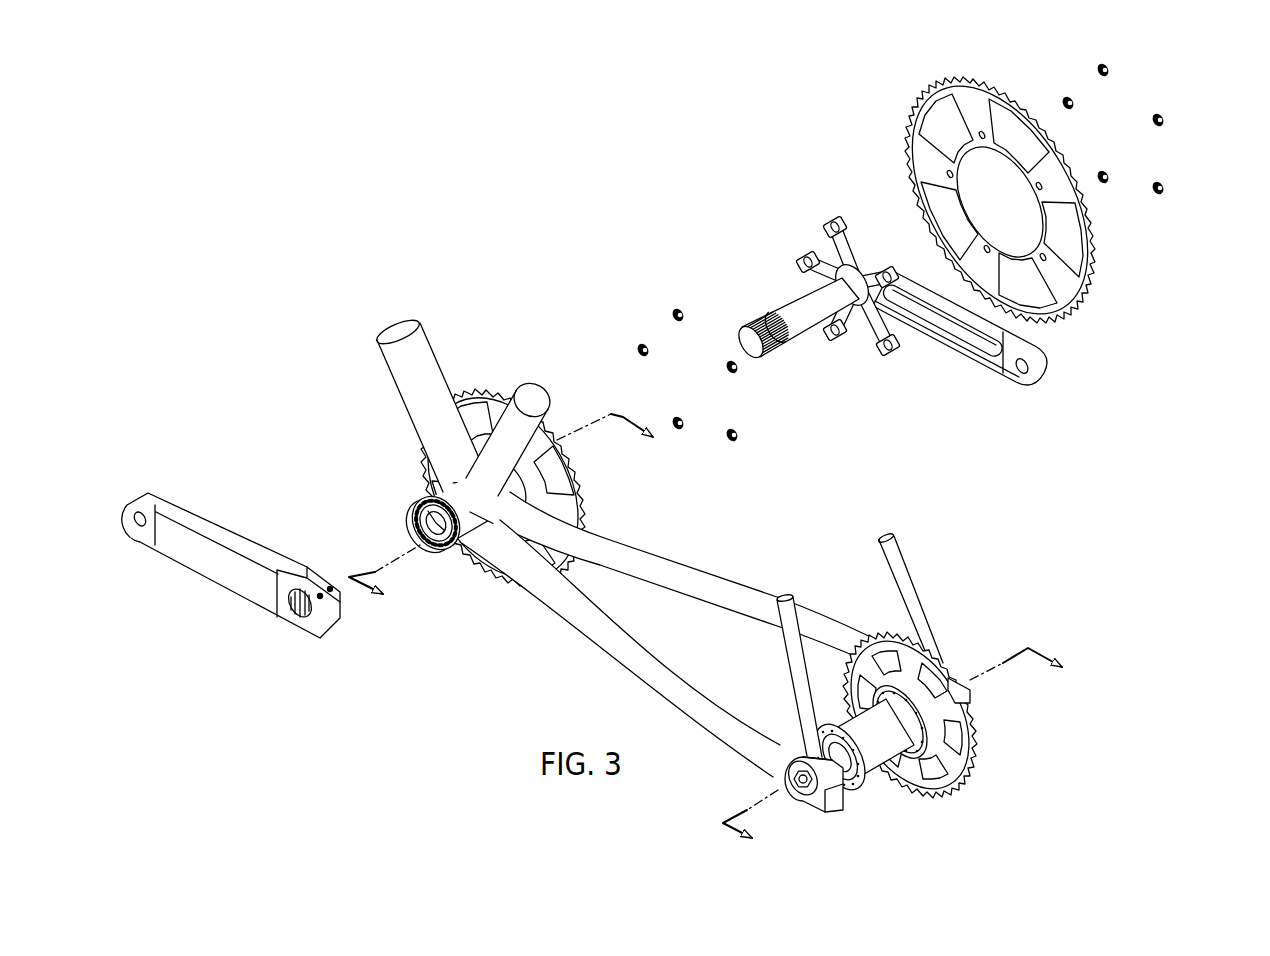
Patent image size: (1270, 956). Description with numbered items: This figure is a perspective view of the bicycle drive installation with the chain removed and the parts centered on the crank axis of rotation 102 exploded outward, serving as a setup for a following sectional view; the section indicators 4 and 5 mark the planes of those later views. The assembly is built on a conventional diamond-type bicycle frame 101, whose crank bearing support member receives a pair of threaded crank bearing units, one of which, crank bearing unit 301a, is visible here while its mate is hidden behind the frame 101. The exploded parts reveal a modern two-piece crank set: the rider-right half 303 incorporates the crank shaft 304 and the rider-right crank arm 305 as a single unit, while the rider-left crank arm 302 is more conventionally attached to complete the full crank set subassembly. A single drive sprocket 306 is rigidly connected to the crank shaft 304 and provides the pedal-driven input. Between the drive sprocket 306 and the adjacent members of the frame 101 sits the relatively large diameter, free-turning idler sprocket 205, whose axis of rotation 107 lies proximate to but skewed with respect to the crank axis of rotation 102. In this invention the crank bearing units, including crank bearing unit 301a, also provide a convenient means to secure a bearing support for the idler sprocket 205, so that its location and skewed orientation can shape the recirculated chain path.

The bicycle frame 101 is at (430, 437).
The axis of rotation of the crank shaft 102 is at (1222, 73).
The axis of rotation of the idler sprocket 107 is at (610, 413).
The idler sprocket 205 is at (557, 507).
The crank bearing unit 301a is at (413, 513).
The rider-left crank arm 302 is at (210, 530).
The rider-right half of the crank set 303 is at (777, 213).
The crank shaft 304 is at (788, 333).
The rider-right crank arm 305 is at (978, 340).
The drive sprocket 306 is at (937, 165).
The section line 4- 4 is at (501, 507).
The section line 5- 5 is at (892, 748).